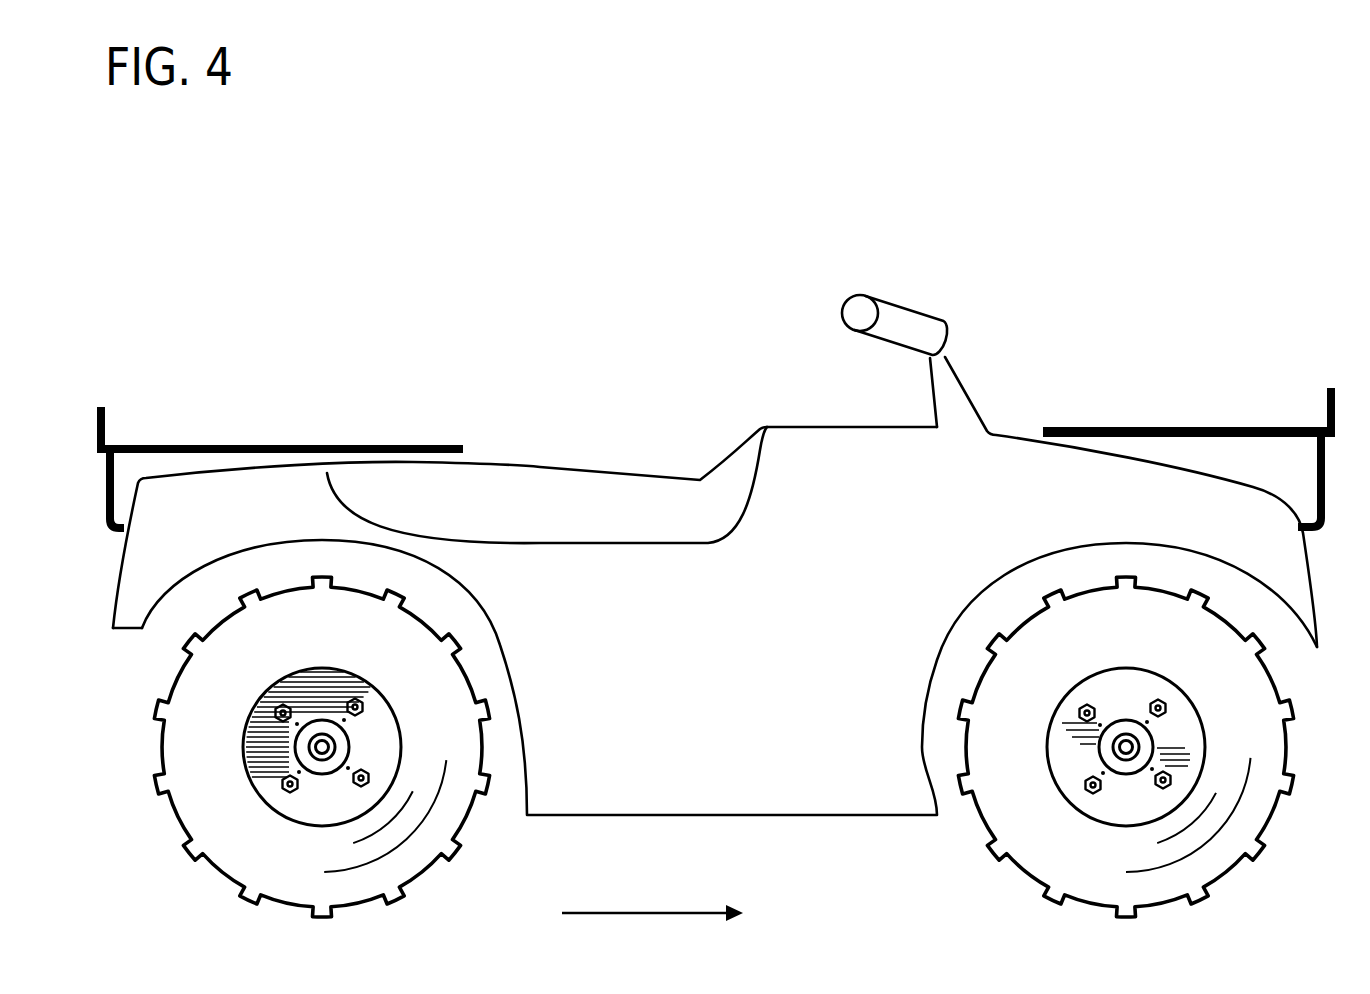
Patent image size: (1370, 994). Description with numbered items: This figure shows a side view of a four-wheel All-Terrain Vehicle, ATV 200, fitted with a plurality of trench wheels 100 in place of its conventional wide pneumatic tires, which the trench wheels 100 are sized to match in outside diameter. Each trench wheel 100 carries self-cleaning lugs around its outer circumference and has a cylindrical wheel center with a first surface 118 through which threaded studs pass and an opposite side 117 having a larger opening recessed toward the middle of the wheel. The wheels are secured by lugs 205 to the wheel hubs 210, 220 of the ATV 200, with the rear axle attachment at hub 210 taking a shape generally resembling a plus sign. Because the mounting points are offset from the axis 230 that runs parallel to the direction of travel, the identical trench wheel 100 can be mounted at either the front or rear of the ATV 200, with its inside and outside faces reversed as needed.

The trench wheel 100 is at (177, 675).
The opposite side of the hub section 117 is at (322, 747).
The first surface 118 is at (1126, 747).
The ATV 200 is at (716, 555).
The lugs 205 is at (360, 706).
The wheel hub 210 is at (1130, 745).
The wheel hub 220 is at (335, 750).
The axis 230 is at (668, 913).